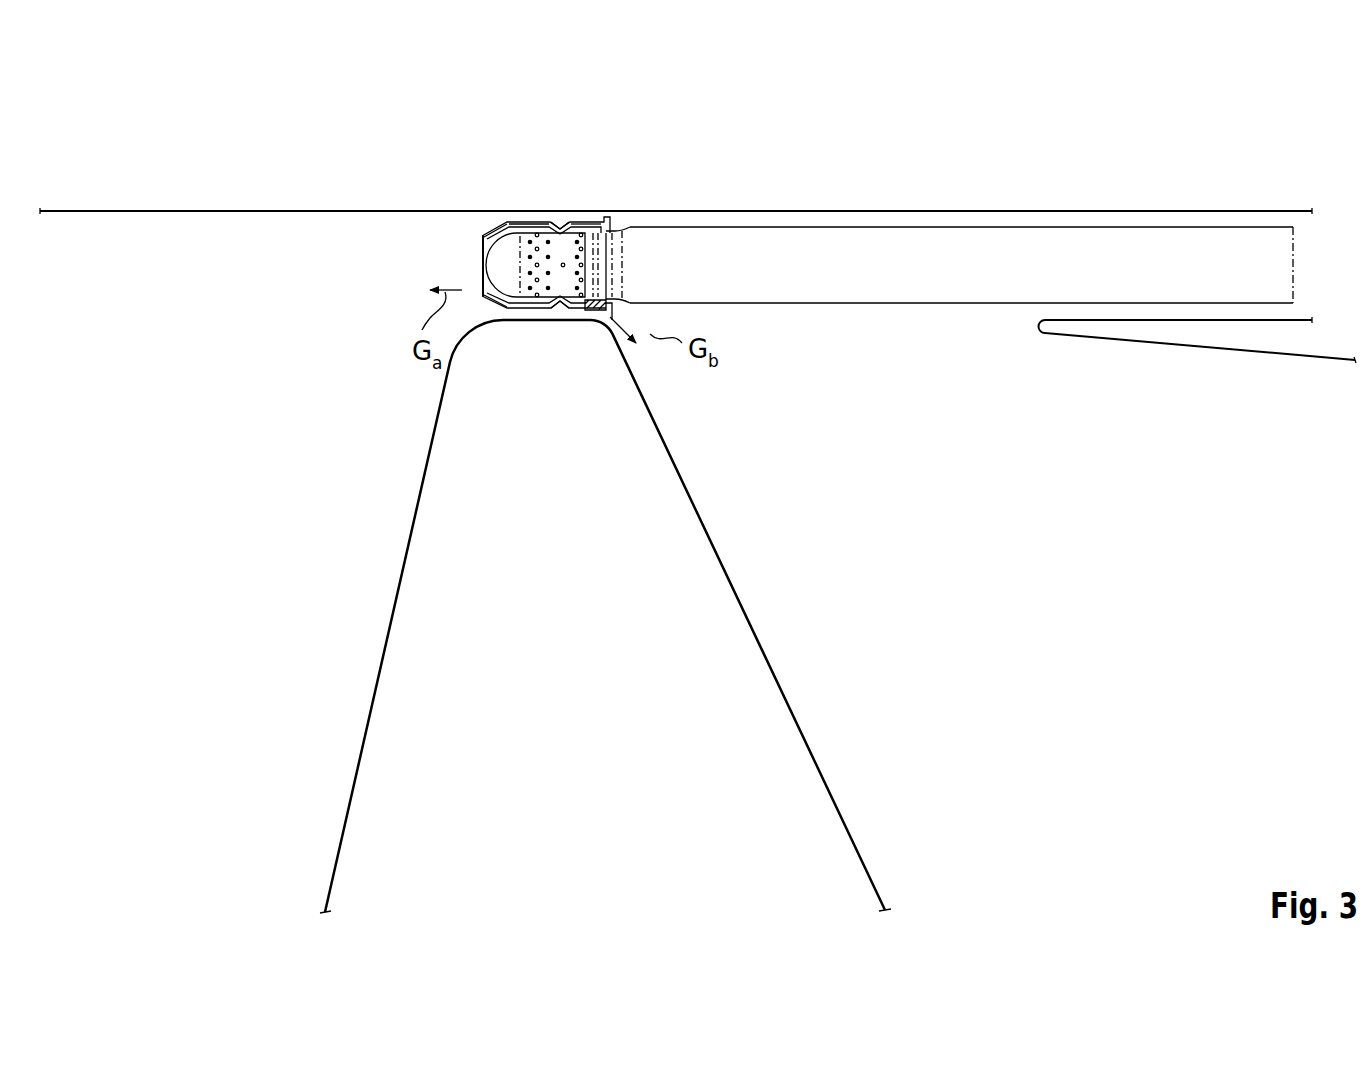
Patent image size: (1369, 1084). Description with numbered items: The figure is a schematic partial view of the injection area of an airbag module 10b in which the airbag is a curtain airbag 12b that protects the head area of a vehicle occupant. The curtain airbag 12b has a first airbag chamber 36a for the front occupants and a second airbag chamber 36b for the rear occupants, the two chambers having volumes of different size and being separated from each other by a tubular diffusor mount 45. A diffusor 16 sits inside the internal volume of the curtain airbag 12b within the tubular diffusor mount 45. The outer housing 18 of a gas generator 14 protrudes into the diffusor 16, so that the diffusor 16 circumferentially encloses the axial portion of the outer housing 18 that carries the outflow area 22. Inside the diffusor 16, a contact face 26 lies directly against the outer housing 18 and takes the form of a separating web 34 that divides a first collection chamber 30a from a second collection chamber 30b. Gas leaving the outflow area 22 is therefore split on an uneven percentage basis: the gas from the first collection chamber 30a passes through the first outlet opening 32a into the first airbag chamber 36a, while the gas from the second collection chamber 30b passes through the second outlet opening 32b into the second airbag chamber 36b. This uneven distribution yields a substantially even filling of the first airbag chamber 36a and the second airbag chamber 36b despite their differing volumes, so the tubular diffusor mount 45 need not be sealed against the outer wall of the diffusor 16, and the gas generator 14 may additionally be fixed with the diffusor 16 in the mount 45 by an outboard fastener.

The airbag module 10b is at (1010, 152).
The curtain airbag 12b is at (324, 205).
The gas generator 14 is at (847, 227).
The diffusor 16 is at (466, 263).
The outer housing 18 is at (498, 288).
The outflow area 22 is at (538, 232).
The contact face 26 is at (557, 226).
The separating web 34 is at (590, 182).
The first collection chamber 30a is at (525, 224).
The second collection chamber 30b is at (583, 224).
The first outlet opening 32a is at (481, 248).
The second outlet opening 32b is at (611, 316).
The first airbag chamber 36a is at (222, 399).
The second airbag chamber 36b is at (964, 539).
The tubular diffusor mount 45 is at (563, 331).